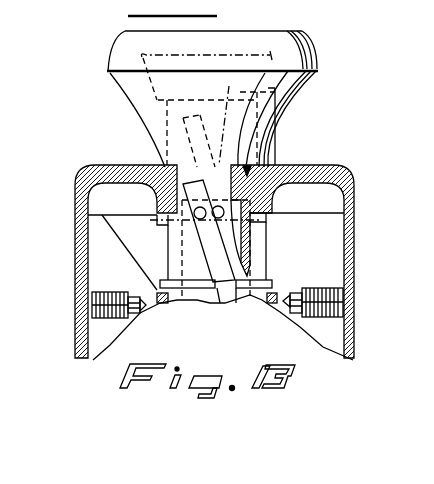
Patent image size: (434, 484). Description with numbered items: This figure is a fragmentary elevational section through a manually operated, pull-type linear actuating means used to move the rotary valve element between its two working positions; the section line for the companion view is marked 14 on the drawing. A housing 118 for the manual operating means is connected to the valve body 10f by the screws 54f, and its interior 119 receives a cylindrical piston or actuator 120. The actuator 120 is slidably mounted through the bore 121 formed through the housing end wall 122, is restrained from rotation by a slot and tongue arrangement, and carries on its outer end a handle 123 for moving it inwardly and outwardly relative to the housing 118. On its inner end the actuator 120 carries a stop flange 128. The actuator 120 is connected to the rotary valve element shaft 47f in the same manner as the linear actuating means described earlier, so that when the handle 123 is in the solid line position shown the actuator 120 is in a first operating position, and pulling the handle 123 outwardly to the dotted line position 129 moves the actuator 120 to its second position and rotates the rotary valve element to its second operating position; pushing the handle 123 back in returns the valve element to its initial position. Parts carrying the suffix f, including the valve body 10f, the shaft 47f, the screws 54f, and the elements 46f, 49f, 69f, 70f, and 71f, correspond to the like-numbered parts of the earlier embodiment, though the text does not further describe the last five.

The handle 123 is at (299, 40).
The dotted line position of the handle 129 is at (290, 93).
The bore 121 is at (283, 132).
The housing end wall 122 is at (297, 160).
The housing 118 is at (357, 214).
The interior of the housing 119 is at (340, 268).
The chamber wall 49f is at (334, 243).
The chamber 69f is at (130, 268).
The piston actuator 120 is at (203, 222).
The center line 71f is at (196, 220).
The pillar 70f is at (220, 250).
The rotary valve element shaft 47f is at (226, 294).
The plate 46f is at (163, 305).
The stop flange 128 is at (272, 284).
The valve body 10f is at (300, 332).
The screws 54f is at (103, 320).
The section line 14 is at (60, 183).